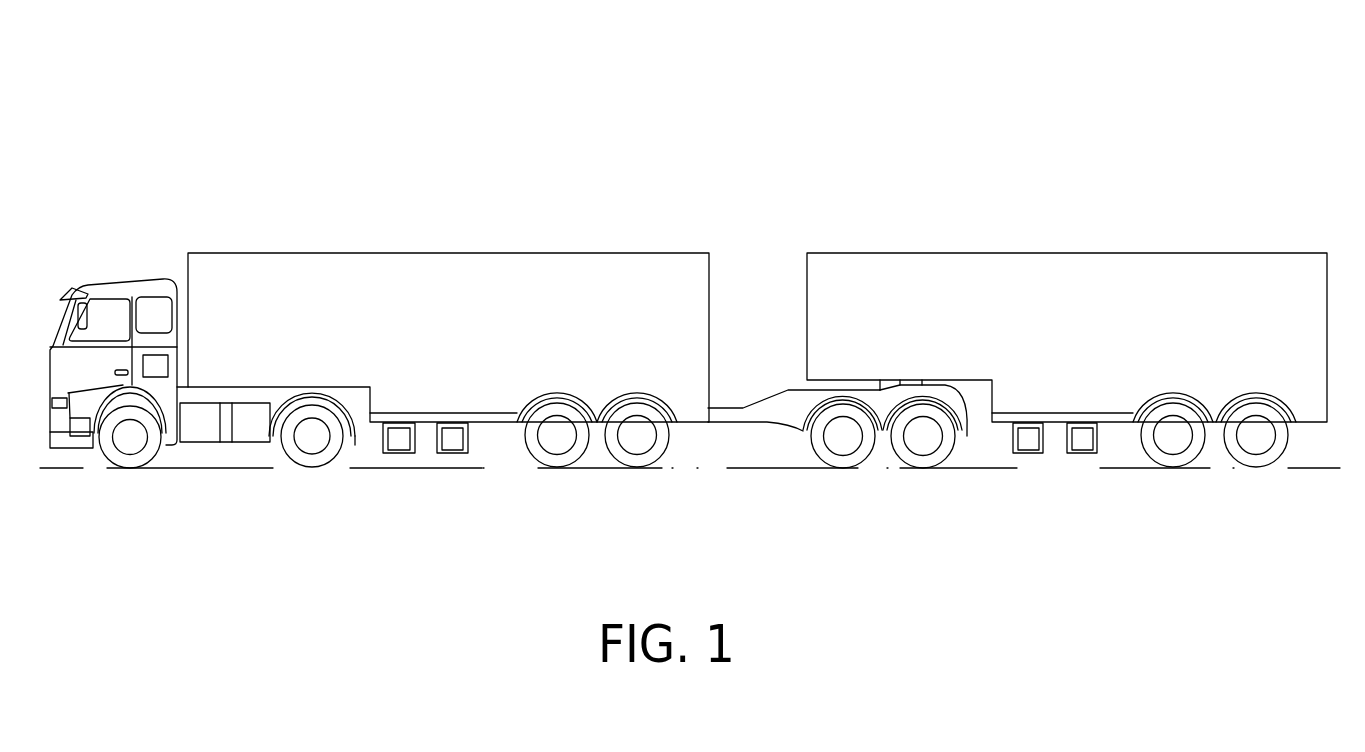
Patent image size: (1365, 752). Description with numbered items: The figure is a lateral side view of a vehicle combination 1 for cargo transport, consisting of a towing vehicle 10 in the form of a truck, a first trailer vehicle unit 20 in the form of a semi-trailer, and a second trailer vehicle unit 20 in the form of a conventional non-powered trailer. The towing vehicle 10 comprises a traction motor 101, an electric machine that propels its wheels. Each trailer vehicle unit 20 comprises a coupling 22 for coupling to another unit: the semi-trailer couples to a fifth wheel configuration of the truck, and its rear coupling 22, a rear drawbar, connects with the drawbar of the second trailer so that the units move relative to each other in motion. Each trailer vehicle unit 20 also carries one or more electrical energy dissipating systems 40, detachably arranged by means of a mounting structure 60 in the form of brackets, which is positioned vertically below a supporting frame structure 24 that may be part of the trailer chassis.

The vehicle combination 1 is at (832, 97).
The towing vehicle 10 is at (147, 260).
The traction motor 101 is at (151, 370).
The trailer vehicle unit 20 is at (443, 302).
The coupling 22 is at (278, 393).
The supporting frame structure 24 is at (497, 418).
The electrical energy dissipating system 40 is at (395, 438).
The mounting structure 60 is at (402, 453).